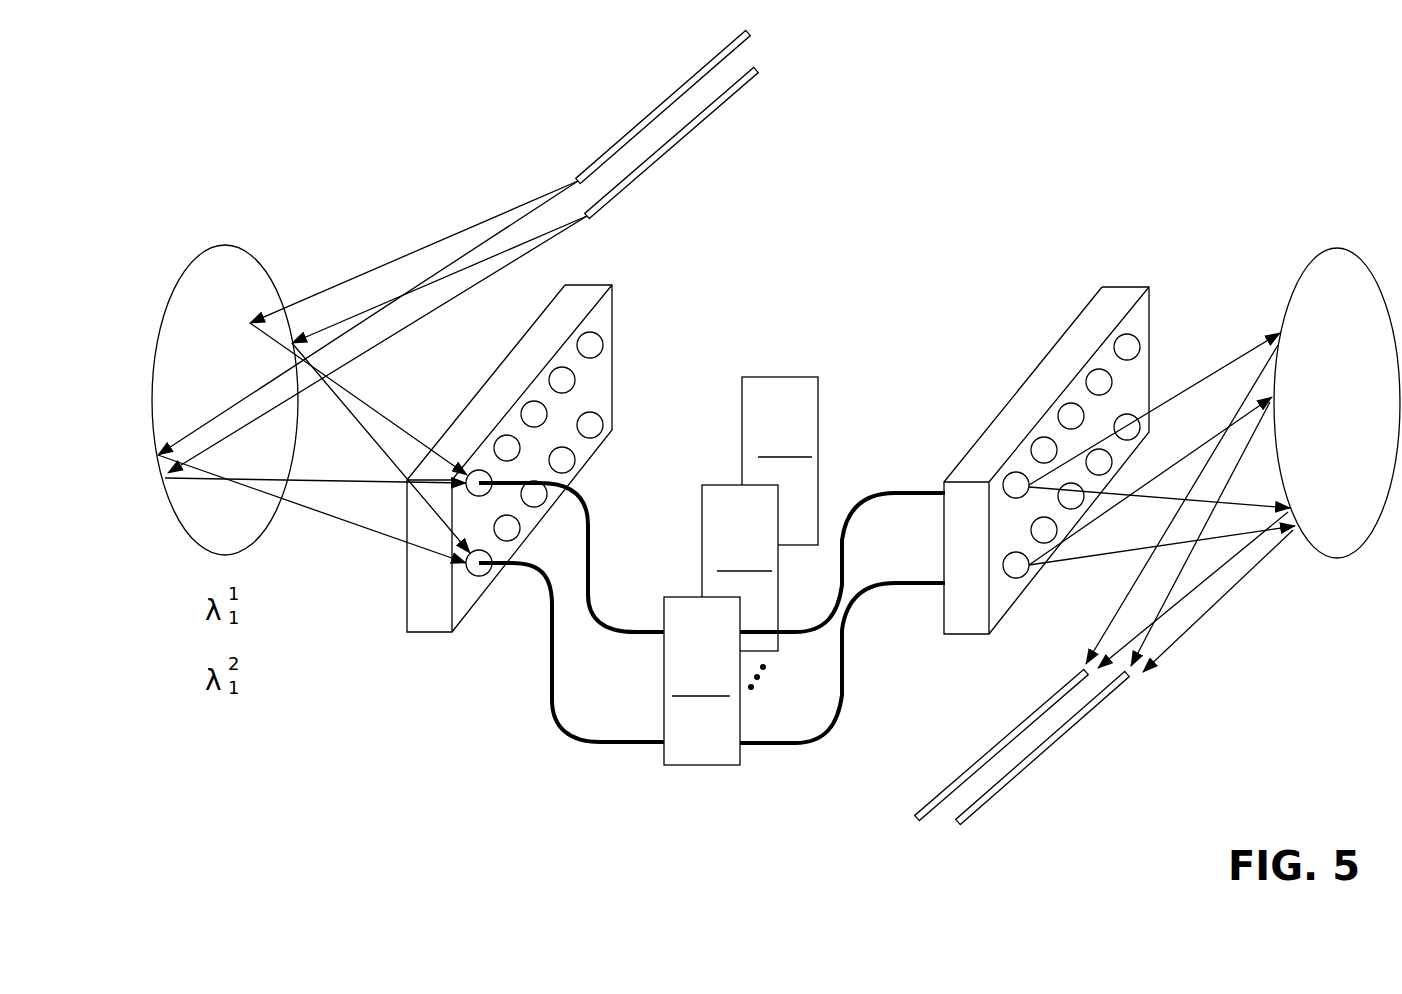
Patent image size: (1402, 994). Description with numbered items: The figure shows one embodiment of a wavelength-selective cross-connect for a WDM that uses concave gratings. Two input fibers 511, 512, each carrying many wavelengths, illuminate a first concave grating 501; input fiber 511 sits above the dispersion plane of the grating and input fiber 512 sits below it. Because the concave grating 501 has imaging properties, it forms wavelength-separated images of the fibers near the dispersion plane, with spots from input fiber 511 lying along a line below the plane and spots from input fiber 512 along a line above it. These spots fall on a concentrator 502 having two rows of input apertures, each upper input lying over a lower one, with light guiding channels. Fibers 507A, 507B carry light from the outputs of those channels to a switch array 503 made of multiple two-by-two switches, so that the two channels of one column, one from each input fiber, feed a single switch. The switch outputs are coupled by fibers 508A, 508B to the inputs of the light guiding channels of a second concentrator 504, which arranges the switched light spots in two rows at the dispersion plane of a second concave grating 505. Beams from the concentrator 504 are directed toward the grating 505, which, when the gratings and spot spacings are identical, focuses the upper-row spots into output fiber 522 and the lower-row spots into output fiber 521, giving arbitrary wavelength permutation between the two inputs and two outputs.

The concave grating 501 is at (265, 267).
The concentrator 502 is at (613, 310).
The switch array 503 is at (740, 432).
The concentrator 504 is at (1122, 286).
The concave grating 505 is at (1376, 258).
The fiber 507A is at (556, 705).
The fiber 507B is at (627, 502).
The fiber 508A is at (845, 680).
The fiber 508B is at (915, 492).
The input fiber 511 is at (692, 73).
The input fiber 512 is at (703, 120).
The output fiber 521 is at (980, 753).
The output fiber 522 is at (1043, 758).